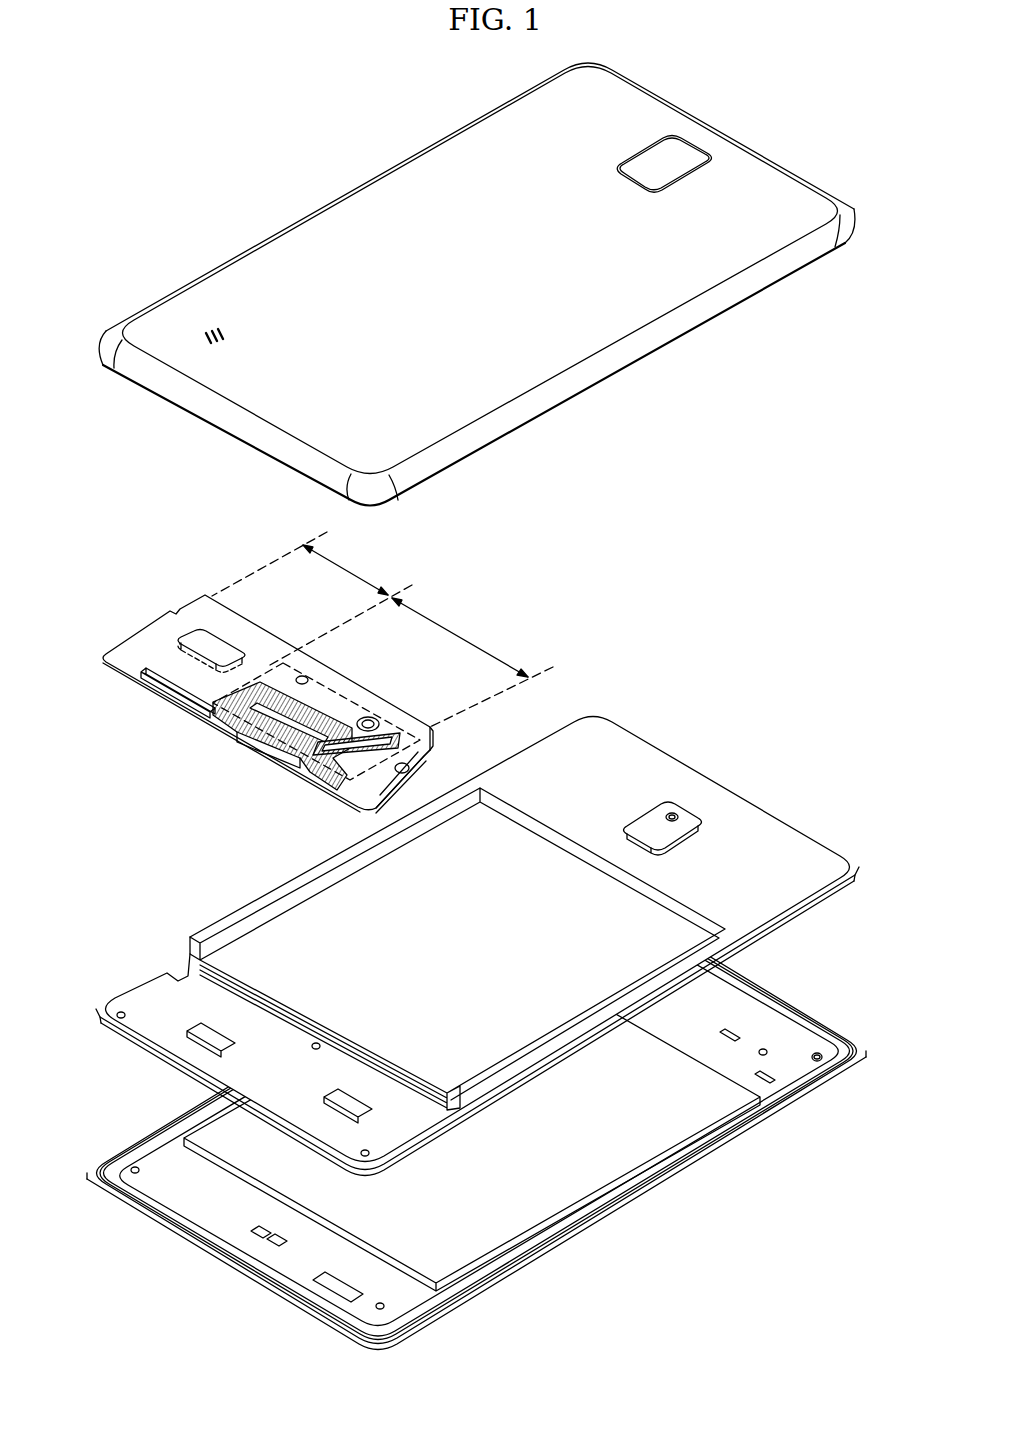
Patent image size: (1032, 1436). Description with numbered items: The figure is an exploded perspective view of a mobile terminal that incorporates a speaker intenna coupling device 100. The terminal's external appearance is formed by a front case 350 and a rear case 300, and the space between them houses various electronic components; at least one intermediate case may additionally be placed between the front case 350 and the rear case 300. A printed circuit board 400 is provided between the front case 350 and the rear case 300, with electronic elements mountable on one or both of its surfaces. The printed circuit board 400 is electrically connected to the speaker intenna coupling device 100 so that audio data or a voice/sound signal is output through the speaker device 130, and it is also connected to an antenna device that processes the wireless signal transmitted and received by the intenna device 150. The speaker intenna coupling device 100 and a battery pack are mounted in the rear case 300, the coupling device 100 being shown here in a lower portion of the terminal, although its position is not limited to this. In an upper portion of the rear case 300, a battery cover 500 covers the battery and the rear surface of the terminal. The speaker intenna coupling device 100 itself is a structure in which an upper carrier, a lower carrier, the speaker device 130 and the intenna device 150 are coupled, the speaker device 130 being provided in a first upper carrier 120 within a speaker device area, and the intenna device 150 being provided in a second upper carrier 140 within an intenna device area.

The battery cover 500 is at (269, 278).
The speaker intenna coupling device 100 is at (152, 588).
The first upper carrier 120 is at (218, 625).
The speaker device 130 is at (198, 638).
The intenna device 150 is at (312, 717).
The second upper carrier 140 is at (405, 780).
The rear case 300 is at (153, 1003).
The printed circuit board 400 is at (163, 1167).
The front case 350 is at (123, 1208).